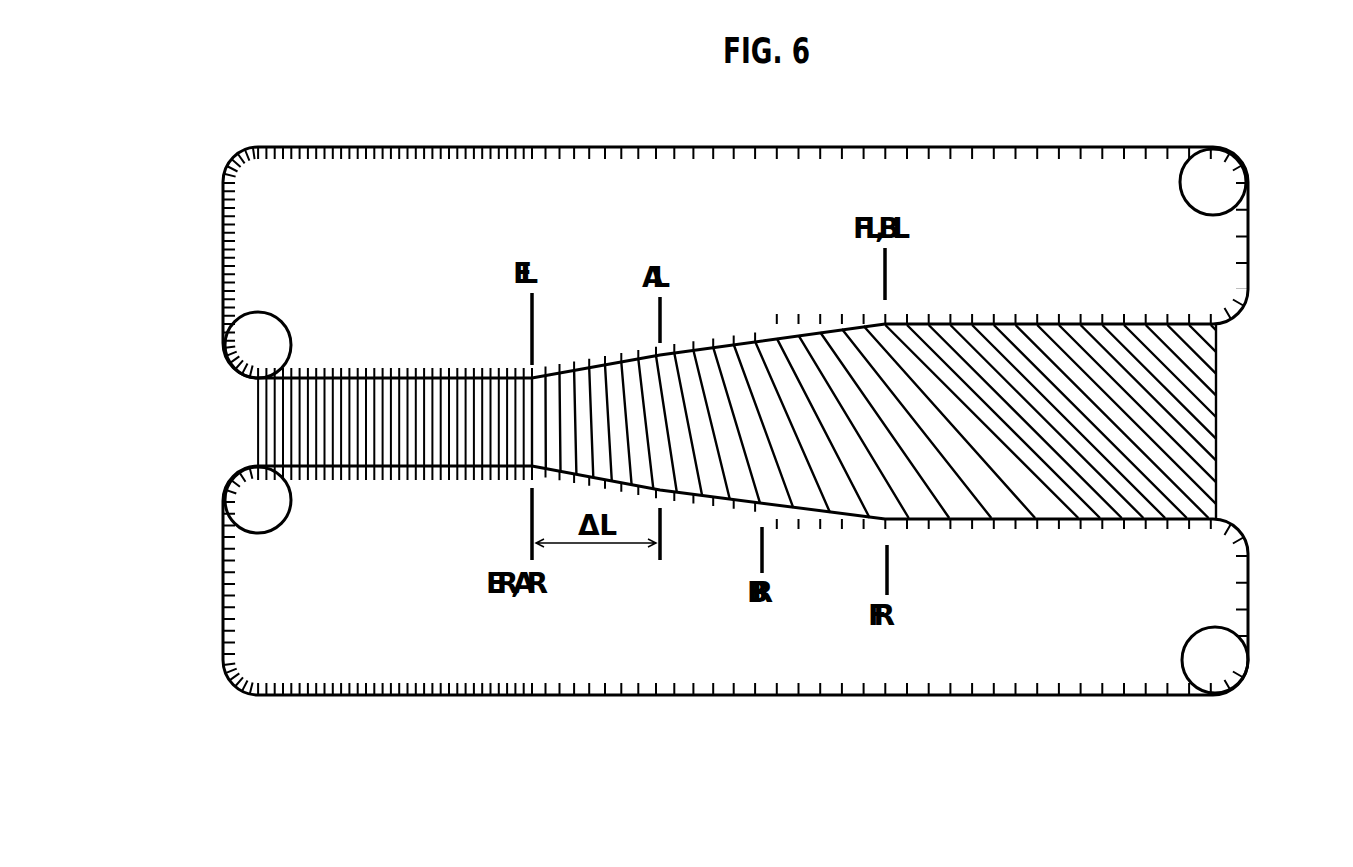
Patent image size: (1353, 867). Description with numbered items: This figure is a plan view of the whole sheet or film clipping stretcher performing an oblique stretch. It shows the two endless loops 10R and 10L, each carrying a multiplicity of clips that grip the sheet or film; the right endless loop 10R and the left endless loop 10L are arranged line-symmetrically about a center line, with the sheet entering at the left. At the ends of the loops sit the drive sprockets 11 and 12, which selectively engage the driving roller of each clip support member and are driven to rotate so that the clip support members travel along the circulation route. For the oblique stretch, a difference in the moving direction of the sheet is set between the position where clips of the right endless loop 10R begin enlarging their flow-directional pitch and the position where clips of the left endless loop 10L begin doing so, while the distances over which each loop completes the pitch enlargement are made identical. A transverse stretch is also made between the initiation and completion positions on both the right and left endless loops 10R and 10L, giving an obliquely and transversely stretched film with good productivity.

The left endless loop 10L is at (953, 137).
The right endless loop 10R is at (540, 705).
The drive sprocket 11 is at (255, 347).
The drive sprocket 12 is at (1223, 190).